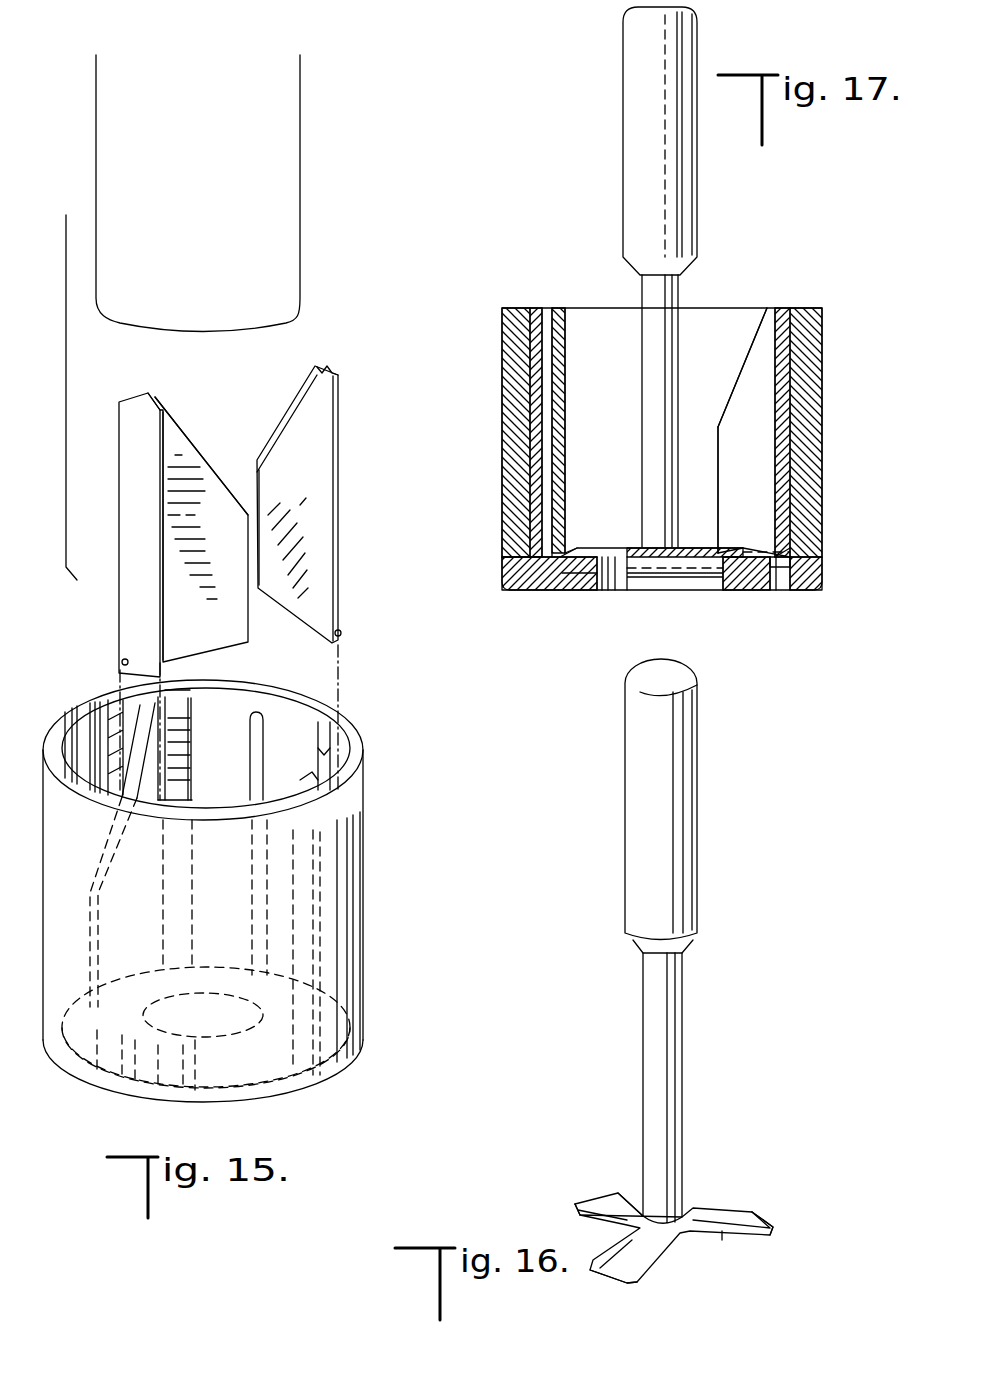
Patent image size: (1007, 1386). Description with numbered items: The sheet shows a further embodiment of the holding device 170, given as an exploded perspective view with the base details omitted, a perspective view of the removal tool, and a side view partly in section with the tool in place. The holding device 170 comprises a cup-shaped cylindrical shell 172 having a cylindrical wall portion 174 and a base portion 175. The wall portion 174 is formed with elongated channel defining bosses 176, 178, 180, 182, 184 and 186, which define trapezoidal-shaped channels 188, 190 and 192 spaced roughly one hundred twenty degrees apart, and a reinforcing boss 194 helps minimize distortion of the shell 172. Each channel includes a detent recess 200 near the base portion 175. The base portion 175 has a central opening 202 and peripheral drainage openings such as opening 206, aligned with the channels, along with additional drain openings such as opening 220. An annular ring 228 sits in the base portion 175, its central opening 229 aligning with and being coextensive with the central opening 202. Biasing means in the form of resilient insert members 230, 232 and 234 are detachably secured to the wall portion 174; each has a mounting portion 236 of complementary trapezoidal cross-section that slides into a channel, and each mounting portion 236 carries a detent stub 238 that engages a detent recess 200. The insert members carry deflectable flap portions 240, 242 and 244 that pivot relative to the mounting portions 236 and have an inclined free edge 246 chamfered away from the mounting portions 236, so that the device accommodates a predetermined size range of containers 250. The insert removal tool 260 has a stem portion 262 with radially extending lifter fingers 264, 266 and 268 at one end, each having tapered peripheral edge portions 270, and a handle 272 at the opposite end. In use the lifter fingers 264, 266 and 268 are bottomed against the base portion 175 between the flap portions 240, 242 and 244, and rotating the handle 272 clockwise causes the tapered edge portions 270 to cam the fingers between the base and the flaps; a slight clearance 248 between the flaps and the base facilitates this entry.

In FIG. 15, the holding device 170 is at (364, 706).
In FIG. 17, the holding device 170 is at (812, 300).
In FIG. 15, the shell 172 is at (366, 822).
In FIG. 17, the shell 172 is at (828, 375).
In FIG. 15, the cylindrical wall portion 174 is at (360, 878).
In FIG. 17, the cylindrical wall portion 174 is at (815, 422).
In FIG. 17, the base portion 175 is at (541, 593).
In FIG. 15, the channel defining boss 176 is at (113, 707).
In FIG. 15, the channel defining boss 178 is at (195, 697).
In FIG. 15, the channel defining boss 180 is at (323, 740).
In FIG. 15, the channel defining boss 182 is at (318, 770).
In FIG. 15, the channel defining boss 184 is at (190, 805).
In FIG. 15, the channel defining boss 186 is at (110, 787).
In FIG. 15, the trapezoidal-shaped channel 188 is at (182, 684).
In FIG. 15, the trapezoidal-shaped channel 190 is at (309, 776).
In FIG. 15, the trapezoidal-shaped channel 192 is at (150, 818).
In FIG. 15, the reinforcing boss 194 is at (252, 762).
In FIG. 17, the detent recess 200 is at (793, 540).
In FIG. 17, the central opening 202 is at (723, 568).
In FIG. 17, the peripheral drainage opening 206 is at (795, 592).
In FIG. 17, the annular ring 228 is at (585, 592).
In FIG. 17, the central opening 229 is at (716, 596).
In FIG. 15, the insert member 230 is at (170, 740).
In FIG. 15, the insert member 232 is at (346, 485).
In FIG. 17, the insert member 232 is at (742, 338).
In FIG. 15, the insert member 234 is at (118, 583).
In FIG. 17, the insert member 234 is at (546, 302).
In FIG. 15, the mounting portion 236 is at (128, 426).
In FIG. 17, the mounting portion 236 is at (780, 305).
In FIG. 15, the detent stub 238 is at (121, 663).
In FIG. 17, the detent stub 238 is at (800, 551).
In FIG. 15, the flap portion 240 is at (150, 957).
In FIG. 15, the flap portion 242 is at (312, 500).
In FIG. 17, the flap portion 242 is at (768, 476).
In FIG. 15, the flap portion 244 is at (224, 544).
In FIG. 17, the flap portion 244 is at (592, 312).
In FIG. 15, the inclined free edge 246 is at (283, 420).
In FIG. 17, the inclined free edge 246 is at (732, 393).
In FIG. 17, the clearance 248 is at (713, 546).
In FIG. 15, the container 250 is at (296, 225).
In FIG. 17, the insert removal tool 260 is at (617, 277).
In FIG. 16, the insert removal tool 260 is at (651, 941).
In FIG. 17, the stem portion 262 is at (645, 371).
In FIG. 16, the stem portion 262 is at (683, 1047).
In FIG. 17, the lifter finger 264 is at (701, 545).
In FIG. 16, the lifter finger 264 is at (732, 1210).
In FIG. 16, the lifter finger 266 is at (632, 1255).
In FIG. 17, the lifter finger 268 is at (595, 552).
In FIG. 16, the lifter finger 268 is at (610, 1200).
In FIG. 16, the tapered peripheral edge portion 270 is at (572, 1210).
In FIG. 16, the peripheral drain opening 220 is at (775, 1226).
In FIG. 17, the handle 272 is at (633, 122).
In FIG. 16, the handle 272 is at (633, 793).